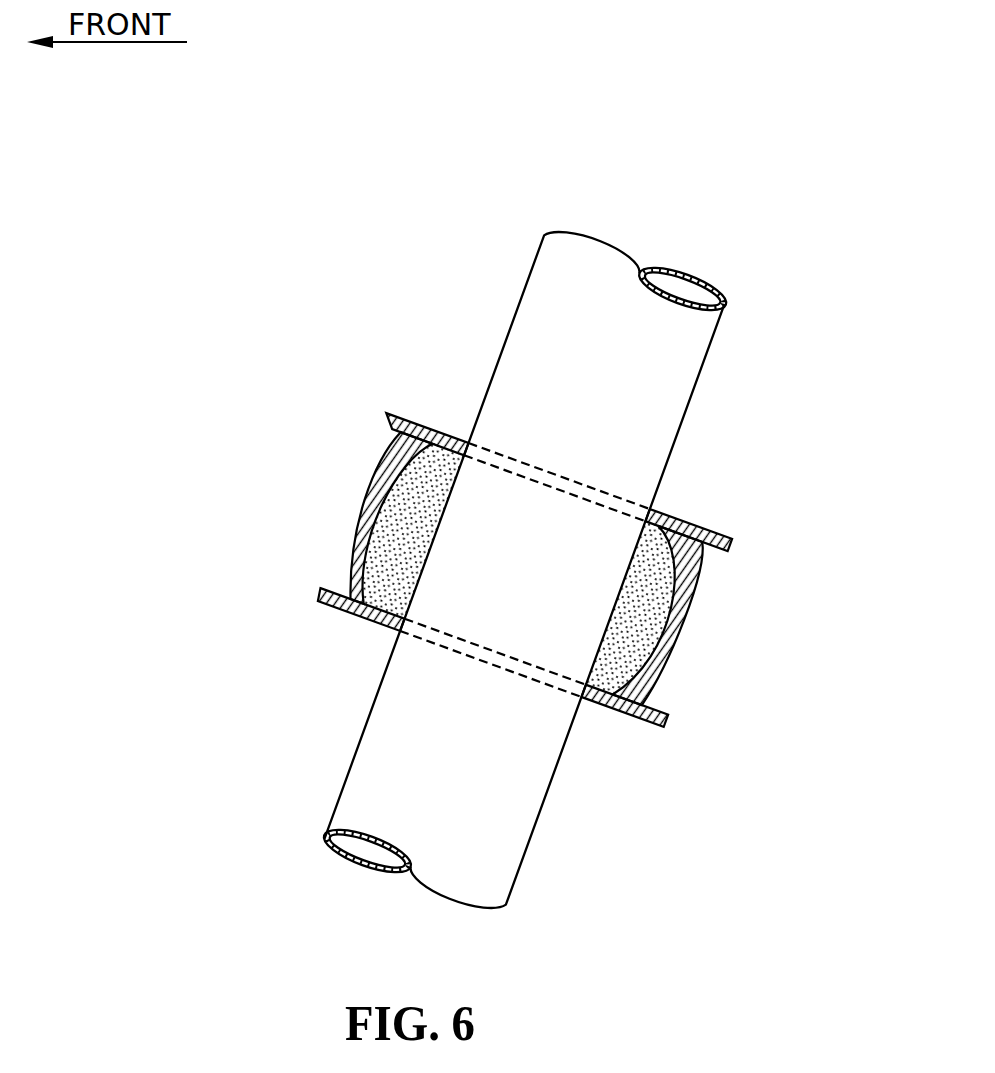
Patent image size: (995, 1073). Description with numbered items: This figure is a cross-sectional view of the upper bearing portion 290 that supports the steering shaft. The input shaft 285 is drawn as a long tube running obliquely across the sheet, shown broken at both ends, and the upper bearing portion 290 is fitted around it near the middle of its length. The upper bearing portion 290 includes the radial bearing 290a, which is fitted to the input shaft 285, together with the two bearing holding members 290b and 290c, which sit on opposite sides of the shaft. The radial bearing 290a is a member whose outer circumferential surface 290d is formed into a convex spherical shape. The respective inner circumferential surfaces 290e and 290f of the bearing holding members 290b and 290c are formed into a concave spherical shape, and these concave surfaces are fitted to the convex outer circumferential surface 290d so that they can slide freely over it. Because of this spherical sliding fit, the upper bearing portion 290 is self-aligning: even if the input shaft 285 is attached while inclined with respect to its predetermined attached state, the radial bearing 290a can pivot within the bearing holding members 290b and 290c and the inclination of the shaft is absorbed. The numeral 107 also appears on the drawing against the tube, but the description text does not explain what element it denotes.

The frame pipe 107 is at (697, 360).
The input shaft 285 is at (501, 309).
The upper bearing portion 290 is at (358, 481).
The radial bearing 290a is at (360, 609).
The bearing holding member 290b is at (395, 516).
The bearing holding member 290c is at (656, 618).
The outer circumferential surface 290d is at (382, 517).
The inner circumferential surface 290e is at (405, 526).
The inner circumferential surface 290f is at (641, 612).